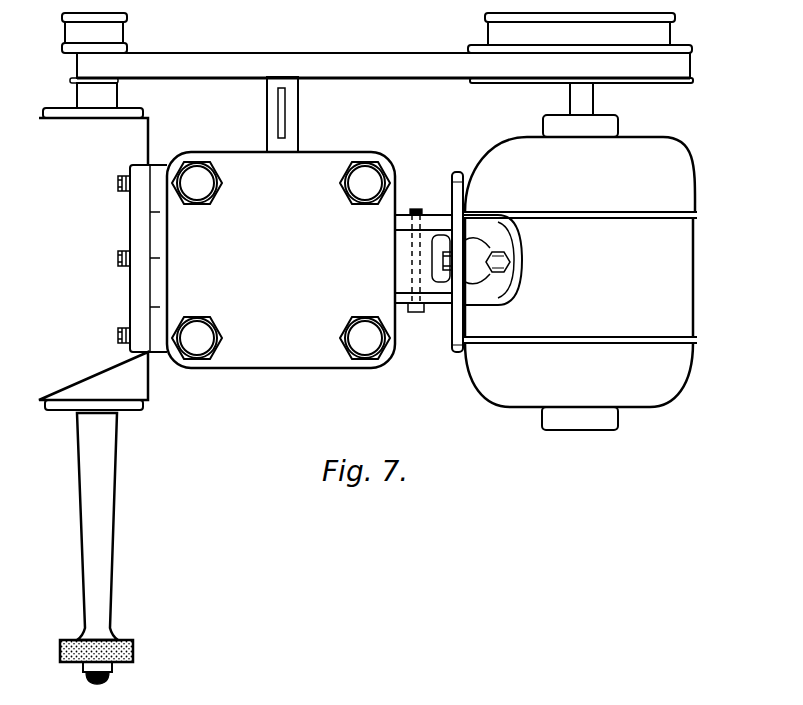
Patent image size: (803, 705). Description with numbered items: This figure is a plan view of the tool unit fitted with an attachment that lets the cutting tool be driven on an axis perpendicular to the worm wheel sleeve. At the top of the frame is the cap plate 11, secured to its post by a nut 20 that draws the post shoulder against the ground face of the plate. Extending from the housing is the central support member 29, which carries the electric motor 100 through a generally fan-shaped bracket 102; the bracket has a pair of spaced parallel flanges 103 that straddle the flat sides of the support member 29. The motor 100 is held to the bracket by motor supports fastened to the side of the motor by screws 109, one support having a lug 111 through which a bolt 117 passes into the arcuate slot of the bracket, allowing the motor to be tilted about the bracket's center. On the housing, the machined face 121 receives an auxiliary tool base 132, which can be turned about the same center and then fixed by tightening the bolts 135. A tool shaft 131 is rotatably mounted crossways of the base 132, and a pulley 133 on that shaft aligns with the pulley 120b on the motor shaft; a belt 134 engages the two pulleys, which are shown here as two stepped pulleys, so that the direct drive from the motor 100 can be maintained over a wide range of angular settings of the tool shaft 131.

The cap plate 11 is at (288, 345).
The nut 20 is at (222, 196).
The central support member 29 is at (405, 248).
The motor 100 is at (628, 357).
The bracket 102 is at (458, 350).
The flanges 103 is at (432, 213).
The screws 109 is at (508, 255).
The lug 111 is at (483, 232).
The bolt 117 is at (446, 275).
The pulley 120b is at (503, 36).
The face 121 is at (153, 357).
The shaft 131 is at (100, 487).
The base 132 is at (143, 290).
The pulley 133 is at (118, 35).
The belt 134 is at (268, 67).
The bolts 135 is at (123, 194).